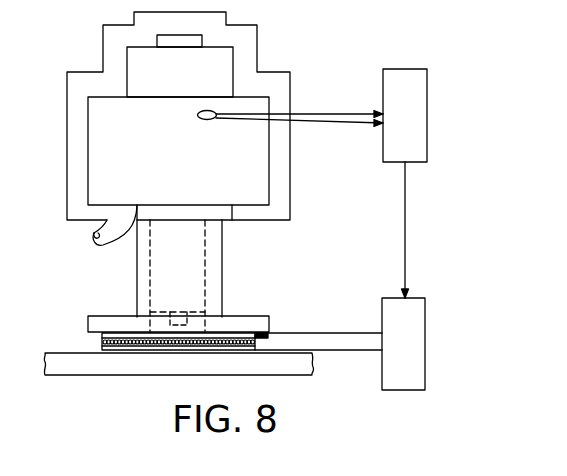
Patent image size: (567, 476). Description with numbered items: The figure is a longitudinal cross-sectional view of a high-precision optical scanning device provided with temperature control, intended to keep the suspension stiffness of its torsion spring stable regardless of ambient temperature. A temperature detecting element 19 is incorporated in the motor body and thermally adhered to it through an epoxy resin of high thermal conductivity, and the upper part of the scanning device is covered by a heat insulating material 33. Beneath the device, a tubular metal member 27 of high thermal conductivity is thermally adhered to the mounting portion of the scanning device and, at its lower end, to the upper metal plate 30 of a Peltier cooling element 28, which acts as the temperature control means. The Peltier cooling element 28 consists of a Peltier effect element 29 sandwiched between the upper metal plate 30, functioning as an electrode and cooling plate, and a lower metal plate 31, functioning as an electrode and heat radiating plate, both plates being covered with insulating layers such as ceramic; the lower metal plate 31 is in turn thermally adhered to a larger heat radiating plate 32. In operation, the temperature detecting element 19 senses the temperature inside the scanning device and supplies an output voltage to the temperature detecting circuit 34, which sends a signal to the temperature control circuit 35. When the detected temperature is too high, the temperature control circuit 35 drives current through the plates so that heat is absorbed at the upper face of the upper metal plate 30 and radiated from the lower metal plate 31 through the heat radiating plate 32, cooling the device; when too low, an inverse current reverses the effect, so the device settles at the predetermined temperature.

The temperature detecting element 19 is at (197, 115).
The tubular metal member 27 is at (218, 250).
The Peltier cooling element 28 is at (102, 340).
The Peltier effect element 29 is at (257, 340).
The upper metal plate 30 is at (240, 337).
The lower metal plate 31 is at (245, 350).
The heat radiating plate 32 is at (67, 368).
The heat insulating material 33 is at (248, 38).
The temperature detecting circuit 34 is at (385, 83).
The temperature control circuit 35 is at (385, 318).